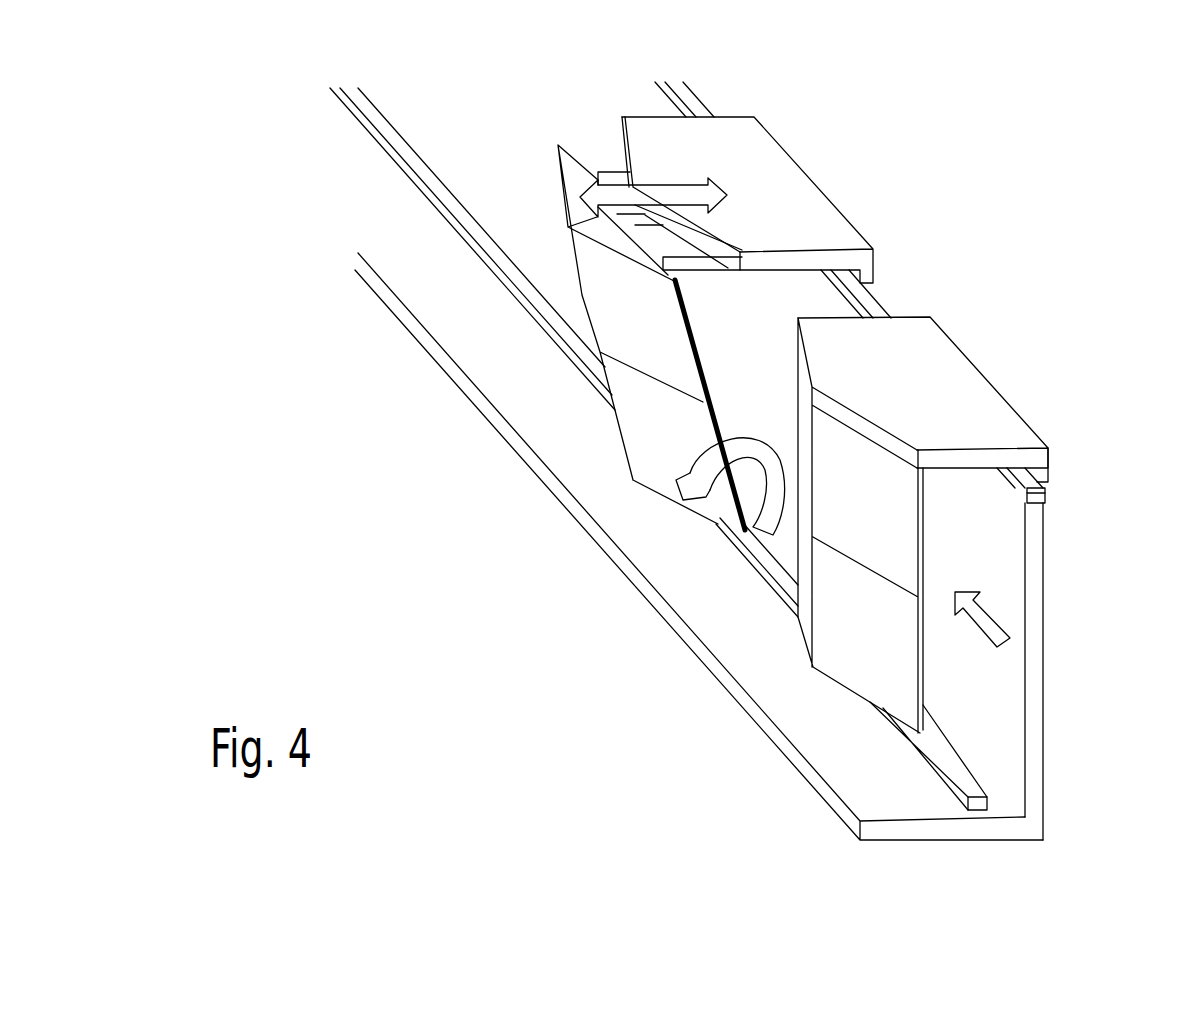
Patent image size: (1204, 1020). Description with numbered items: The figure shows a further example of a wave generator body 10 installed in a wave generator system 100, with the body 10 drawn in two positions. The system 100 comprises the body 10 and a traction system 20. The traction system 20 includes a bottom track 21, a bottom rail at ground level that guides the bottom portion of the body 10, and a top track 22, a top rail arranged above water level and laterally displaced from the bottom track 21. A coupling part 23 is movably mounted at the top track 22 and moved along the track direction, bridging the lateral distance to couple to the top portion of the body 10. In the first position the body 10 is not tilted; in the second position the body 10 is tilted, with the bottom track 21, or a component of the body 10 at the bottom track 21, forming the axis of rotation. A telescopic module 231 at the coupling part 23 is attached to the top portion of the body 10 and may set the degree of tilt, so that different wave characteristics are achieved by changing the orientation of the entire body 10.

The wave generator system 100 is at (1100, 167).
The wave generator body 10 is at (613, 470).
The traction system 20 is at (1085, 643).
The bottom track 21 is at (985, 795).
The top track 22 is at (1037, 497).
The coupling part 23 is at (785, 187).
The telescopic module 231 is at (607, 167).